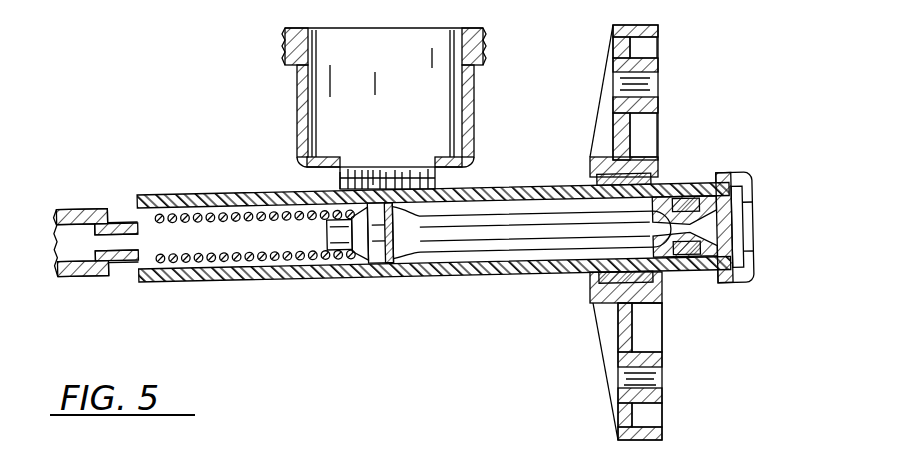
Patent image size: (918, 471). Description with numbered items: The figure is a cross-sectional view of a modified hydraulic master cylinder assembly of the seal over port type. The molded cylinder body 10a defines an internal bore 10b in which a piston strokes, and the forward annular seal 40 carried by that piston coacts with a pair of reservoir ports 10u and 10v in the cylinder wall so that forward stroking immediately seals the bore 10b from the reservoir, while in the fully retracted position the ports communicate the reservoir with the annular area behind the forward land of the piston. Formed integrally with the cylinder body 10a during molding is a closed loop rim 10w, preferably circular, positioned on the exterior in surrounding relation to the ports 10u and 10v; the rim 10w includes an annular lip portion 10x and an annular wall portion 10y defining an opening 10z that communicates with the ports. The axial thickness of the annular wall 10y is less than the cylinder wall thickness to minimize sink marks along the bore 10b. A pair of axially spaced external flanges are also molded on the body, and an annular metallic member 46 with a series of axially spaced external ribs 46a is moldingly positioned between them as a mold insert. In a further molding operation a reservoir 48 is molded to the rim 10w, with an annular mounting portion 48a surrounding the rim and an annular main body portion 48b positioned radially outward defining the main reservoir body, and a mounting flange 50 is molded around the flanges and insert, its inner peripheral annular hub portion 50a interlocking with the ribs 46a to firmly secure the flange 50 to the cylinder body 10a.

The cylinder body 10a is at (196, 192).
The bore 10b is at (253, 274).
The reservoir port 10u is at (382, 182).
The reservoir port 10v is at (425, 178).
The closed loop rim 10w is at (358, 180).
The annular lip portion 10x is at (338, 184).
The annular wall portion 10y is at (437, 183).
The opening 10z is at (368, 168).
The forward annular seal 40 is at (381, 278).
The annular metallic member 46 is at (633, 356).
The external ribs 46a is at (597, 299).
The reservoir 48 is at (390, 108).
The annular mounting portion 48a is at (470, 175).
The annular main body portion 48b is at (478, 92).
The mounting flange 50 is at (657, 101).
The inner peripheral annular hub portion 50a is at (655, 170).